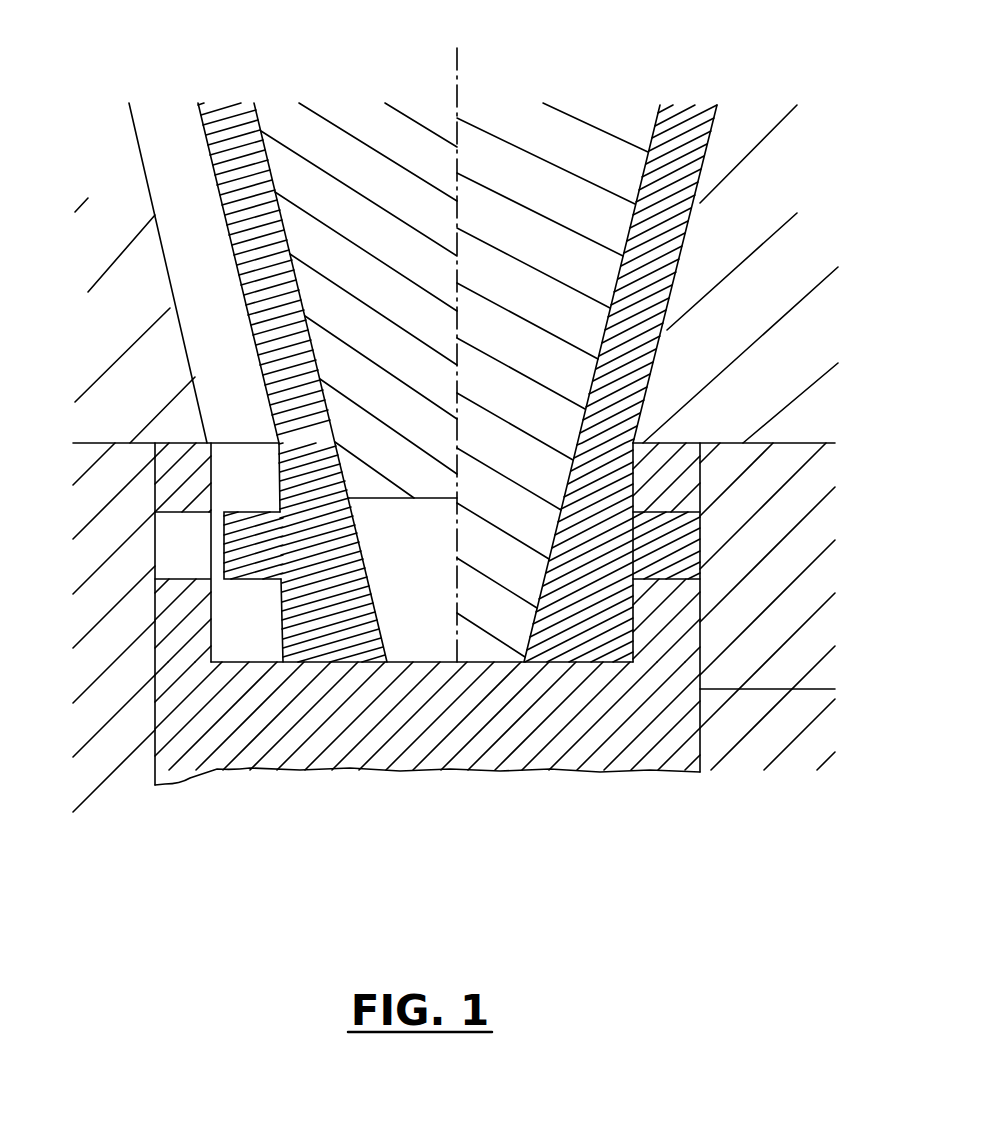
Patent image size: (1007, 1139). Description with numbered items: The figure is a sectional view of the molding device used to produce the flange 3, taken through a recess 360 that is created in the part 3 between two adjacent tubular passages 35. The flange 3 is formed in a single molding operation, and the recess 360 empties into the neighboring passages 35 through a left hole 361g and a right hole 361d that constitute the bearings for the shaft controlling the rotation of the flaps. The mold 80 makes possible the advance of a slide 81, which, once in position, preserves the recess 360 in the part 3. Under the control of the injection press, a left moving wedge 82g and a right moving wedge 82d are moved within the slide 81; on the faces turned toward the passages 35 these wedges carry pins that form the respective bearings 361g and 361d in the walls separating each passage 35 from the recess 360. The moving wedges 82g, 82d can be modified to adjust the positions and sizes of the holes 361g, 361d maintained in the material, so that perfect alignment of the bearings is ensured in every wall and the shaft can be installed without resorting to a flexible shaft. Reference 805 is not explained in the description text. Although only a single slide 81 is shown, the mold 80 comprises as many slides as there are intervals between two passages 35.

The flange 3 is at (417, 747).
The passages 35 is at (131, 712).
The mold 80 is at (130, 402).
The slide 81 is at (287, 185).
The left moving wedge 82g is at (308, 362).
The right moving wedge 82d is at (597, 403).
The annular shoulder 805 is at (83, 555).
The recess 360 is at (471, 677).
The left hole 361g is at (182, 582).
The right hole 361d is at (660, 515).